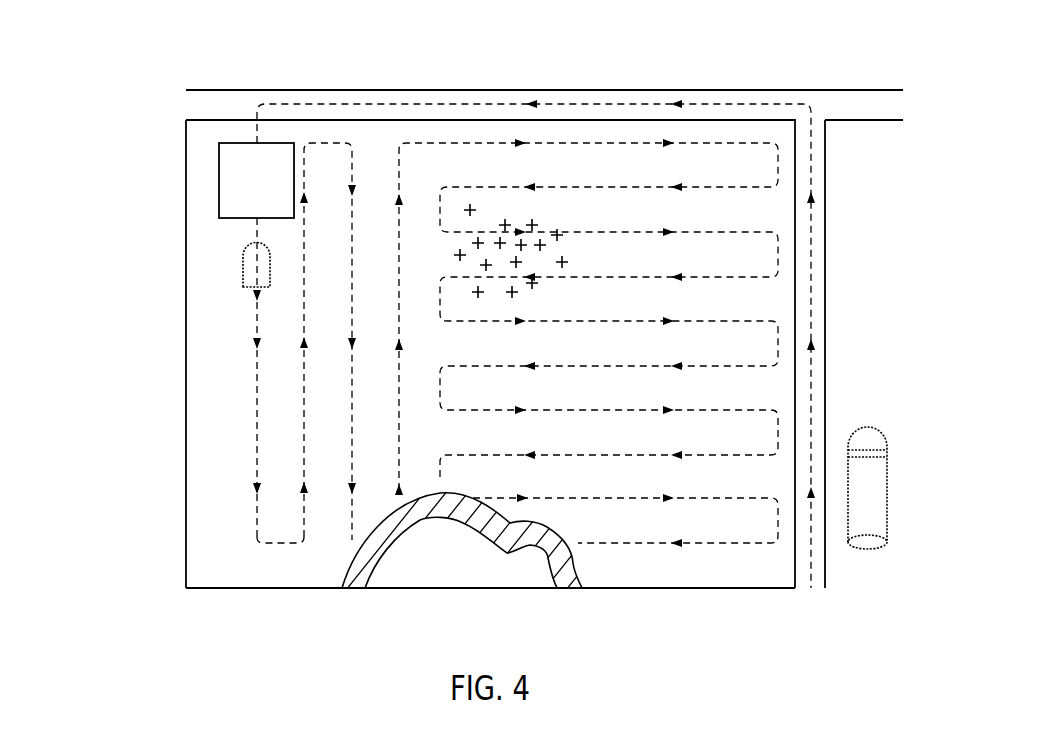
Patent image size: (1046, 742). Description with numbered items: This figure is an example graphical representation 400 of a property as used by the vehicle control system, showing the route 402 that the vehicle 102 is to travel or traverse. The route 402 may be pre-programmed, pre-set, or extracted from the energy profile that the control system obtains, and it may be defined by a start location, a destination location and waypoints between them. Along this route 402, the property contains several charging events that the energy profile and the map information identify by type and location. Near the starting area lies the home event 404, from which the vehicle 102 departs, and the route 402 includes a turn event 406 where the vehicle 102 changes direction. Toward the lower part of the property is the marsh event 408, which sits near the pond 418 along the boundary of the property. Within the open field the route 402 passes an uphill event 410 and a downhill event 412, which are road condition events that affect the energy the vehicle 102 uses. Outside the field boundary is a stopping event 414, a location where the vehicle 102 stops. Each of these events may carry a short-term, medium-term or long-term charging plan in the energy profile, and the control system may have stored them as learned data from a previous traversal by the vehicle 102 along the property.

The cleaning environment map 400 is at (100, 96).
The vehicle 102 is at (243, 265).
The route 402 is at (254, 340).
The home event 404 is at (219, 180).
The turn event 406 is at (266, 542).
The marsh event 408 is at (410, 508).
The uphill event 410 is at (450, 241).
The downhill event 412 is at (565, 237).
The stopping event 414 is at (887, 492).
The pond 418 is at (447, 588).